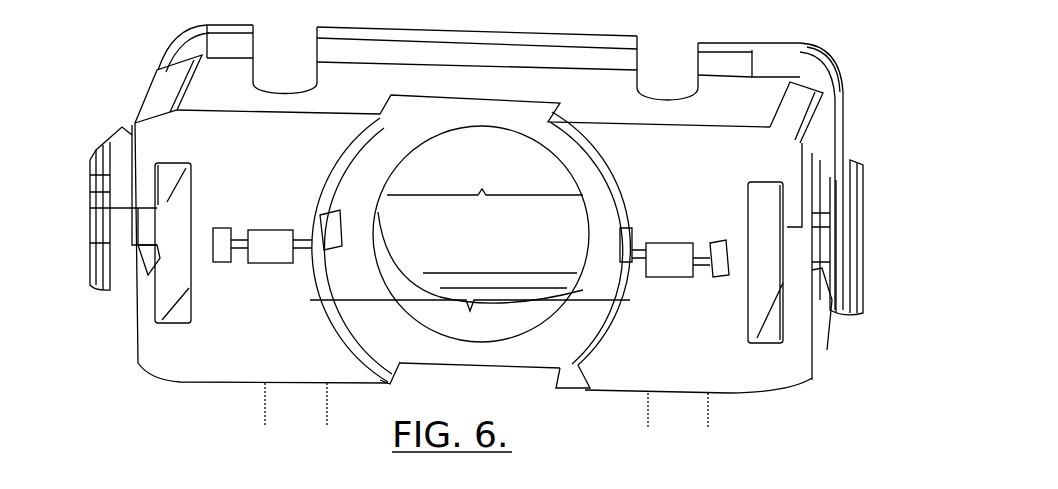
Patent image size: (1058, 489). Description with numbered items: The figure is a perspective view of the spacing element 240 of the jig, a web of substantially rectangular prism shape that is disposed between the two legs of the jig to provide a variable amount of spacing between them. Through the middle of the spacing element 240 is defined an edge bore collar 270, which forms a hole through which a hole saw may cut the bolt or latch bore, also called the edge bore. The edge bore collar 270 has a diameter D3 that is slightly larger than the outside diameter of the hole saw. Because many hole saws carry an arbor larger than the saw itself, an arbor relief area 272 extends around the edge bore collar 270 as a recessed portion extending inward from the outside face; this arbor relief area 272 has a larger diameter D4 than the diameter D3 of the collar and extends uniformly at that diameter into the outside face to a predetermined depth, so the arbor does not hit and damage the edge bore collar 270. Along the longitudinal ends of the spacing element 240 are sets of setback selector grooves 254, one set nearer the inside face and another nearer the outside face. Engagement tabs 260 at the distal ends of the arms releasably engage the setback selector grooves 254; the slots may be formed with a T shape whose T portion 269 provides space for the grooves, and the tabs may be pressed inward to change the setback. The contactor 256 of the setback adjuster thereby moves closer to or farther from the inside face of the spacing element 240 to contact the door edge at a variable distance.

The spacing element 240 is at (723, 367).
The setback selector grooves 254 is at (143, 267).
The contactor 256 is at (820, 67).
The engagement tab 260 is at (103, 243).
The T portion 269 is at (173, 310).
The edge bore collar 270 is at (397, 267).
The arbor relief area 272 is at (581, 340).
The diameter of the edge bore collar D3 is at (485, 178).
The diameter of the arbor relief area D4 is at (470, 322).